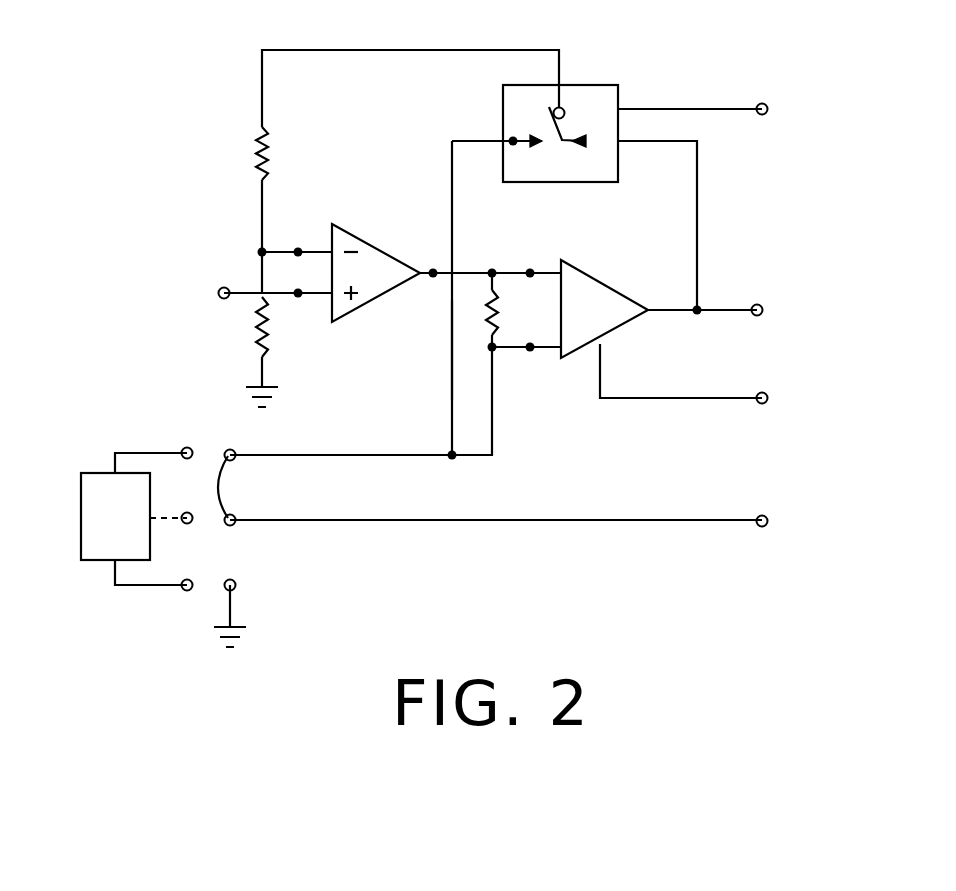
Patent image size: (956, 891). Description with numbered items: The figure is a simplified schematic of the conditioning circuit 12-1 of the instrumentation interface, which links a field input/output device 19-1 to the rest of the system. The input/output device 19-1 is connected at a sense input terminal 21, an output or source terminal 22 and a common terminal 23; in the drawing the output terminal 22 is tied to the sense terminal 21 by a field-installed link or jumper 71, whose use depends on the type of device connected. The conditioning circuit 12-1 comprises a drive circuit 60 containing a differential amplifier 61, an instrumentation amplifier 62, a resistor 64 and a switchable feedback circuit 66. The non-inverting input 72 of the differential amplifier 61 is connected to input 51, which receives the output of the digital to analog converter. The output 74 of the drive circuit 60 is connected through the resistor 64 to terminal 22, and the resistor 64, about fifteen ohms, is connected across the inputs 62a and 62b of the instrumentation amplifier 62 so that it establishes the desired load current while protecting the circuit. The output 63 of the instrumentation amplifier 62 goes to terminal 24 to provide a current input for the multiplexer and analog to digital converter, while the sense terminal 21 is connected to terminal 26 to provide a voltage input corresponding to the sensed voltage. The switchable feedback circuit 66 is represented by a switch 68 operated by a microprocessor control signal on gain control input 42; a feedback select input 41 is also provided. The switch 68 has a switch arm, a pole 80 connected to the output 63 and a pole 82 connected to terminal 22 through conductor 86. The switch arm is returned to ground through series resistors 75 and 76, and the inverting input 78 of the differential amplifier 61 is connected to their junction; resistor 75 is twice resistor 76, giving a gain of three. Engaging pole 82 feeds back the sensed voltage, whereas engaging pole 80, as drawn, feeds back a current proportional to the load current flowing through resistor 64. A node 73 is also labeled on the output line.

The conditioning circuit 12-1 is at (560, 603).
The input/output device 19-1 is at (80, 490).
The sense input terminal 21 is at (236, 526).
The output or source terminal 22 is at (236, 462).
The common terminal 23 is at (234, 590).
The output terminal 24 is at (762, 307).
The output terminal 26 is at (760, 516).
The feedback select input 41 is at (761, 404).
The gain control input 42 is at (760, 114).
The input 51 is at (220, 298).
The drive circuit 60 is at (232, 270).
The differential amplifier 61 is at (362, 302).
The instrumentation amplifier 62 is at (600, 278).
The input 62a is at (530, 270).
The input 62b is at (530, 350).
The output 63 is at (700, 308).
The resistor 64 is at (496, 330).
The switchable feedback circuit 66 is at (625, 166).
The switch 68 is at (578, 183).
The link or jumper 71 is at (215, 490).
The non-inverting input 72 is at (298, 296).
The output node 73 is at (450, 453).
The output 74 is at (434, 270).
The resistor 75 is at (268, 151).
The resistor 76 is at (255, 336).
The inverting input 78 is at (298, 250).
The pole 80 is at (602, 142).
The pole 82 is at (512, 138).
The conductor 86 is at (451, 368).